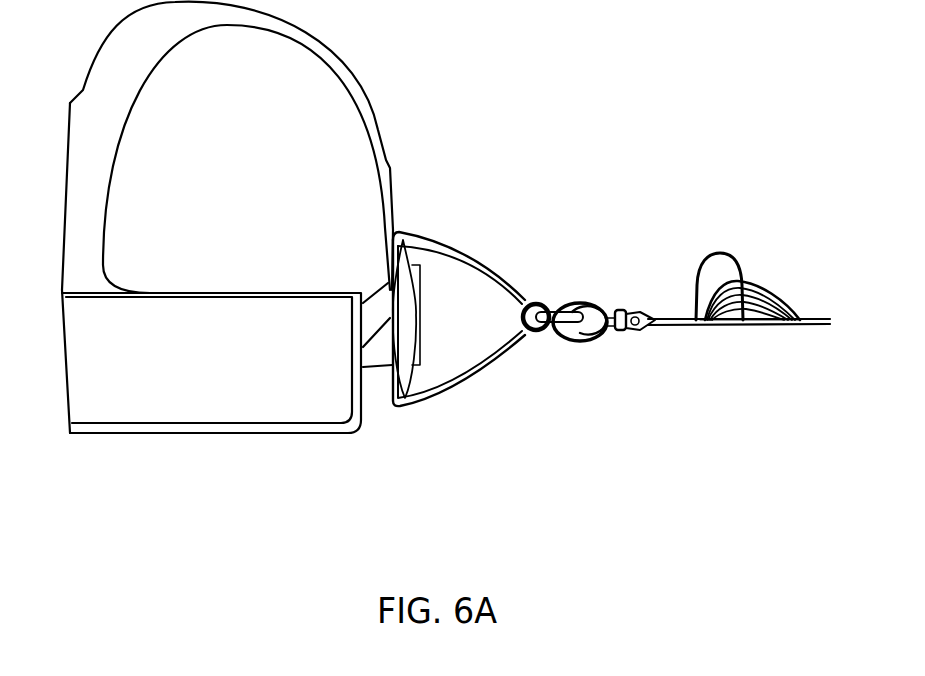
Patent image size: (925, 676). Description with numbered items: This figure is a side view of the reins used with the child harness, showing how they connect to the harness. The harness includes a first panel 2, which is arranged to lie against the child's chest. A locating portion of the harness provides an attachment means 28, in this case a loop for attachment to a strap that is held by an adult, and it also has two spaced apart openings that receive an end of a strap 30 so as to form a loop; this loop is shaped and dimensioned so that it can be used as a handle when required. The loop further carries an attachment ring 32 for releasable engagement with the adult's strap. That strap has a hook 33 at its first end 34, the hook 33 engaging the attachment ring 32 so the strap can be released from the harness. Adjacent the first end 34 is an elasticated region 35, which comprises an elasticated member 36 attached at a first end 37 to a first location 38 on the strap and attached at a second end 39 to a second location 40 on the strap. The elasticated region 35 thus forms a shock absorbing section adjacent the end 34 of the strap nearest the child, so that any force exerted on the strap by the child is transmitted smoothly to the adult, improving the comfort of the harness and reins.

The first panel 2 is at (93, 347).
The attachment means 28 is at (797, 320).
The strap 30 is at (450, 392).
The attachment ring 32 is at (550, 327).
The hook 33 is at (597, 307).
The first end 34 is at (630, 330).
The elasticated region 35 is at (723, 342).
The elasticated member 36 is at (732, 325).
The first end 37 is at (687, 325).
The first location 38 is at (690, 318).
The second end 39 is at (767, 322).
The second location 40 is at (763, 313).